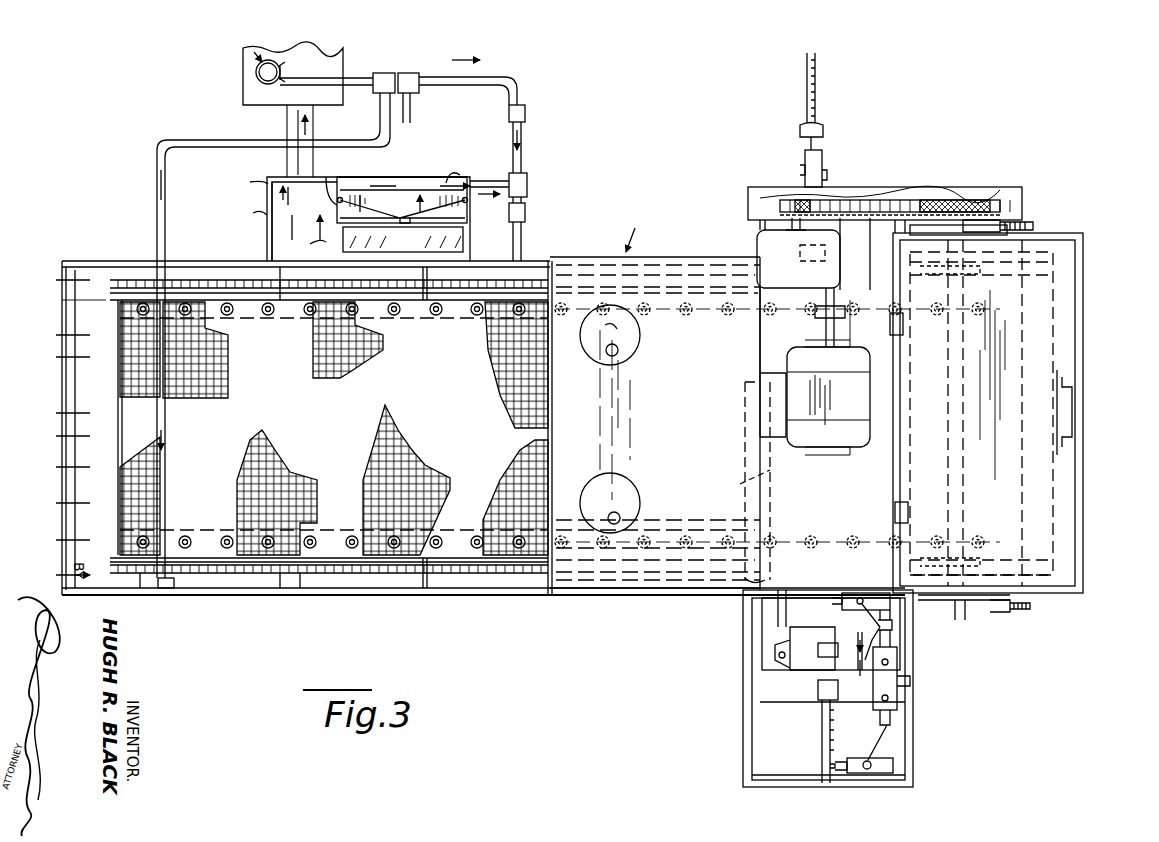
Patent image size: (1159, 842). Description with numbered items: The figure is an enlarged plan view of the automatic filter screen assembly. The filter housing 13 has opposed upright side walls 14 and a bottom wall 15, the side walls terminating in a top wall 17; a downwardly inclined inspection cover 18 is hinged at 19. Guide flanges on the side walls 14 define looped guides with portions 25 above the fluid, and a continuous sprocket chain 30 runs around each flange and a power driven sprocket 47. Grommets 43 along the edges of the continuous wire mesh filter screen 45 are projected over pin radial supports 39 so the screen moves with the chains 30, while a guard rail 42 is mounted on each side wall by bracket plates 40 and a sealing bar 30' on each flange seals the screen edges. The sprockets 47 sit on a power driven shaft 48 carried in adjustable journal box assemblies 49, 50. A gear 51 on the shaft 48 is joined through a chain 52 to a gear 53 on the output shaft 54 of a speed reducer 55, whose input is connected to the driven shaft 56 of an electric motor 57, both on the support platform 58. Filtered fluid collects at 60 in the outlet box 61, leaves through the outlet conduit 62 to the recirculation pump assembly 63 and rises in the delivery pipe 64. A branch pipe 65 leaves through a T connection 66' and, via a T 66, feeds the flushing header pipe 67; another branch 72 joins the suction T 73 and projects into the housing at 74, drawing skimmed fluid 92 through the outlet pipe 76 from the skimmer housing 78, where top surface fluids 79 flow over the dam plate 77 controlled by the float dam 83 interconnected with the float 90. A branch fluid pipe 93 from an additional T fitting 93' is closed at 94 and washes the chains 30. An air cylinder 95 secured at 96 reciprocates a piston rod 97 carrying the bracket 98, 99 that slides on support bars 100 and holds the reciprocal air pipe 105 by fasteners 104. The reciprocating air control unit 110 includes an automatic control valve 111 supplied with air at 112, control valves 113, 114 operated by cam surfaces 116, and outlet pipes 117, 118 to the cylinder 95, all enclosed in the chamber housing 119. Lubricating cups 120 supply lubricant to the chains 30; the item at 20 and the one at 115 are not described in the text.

The filter housing 13 is at (634, 228).
The side walls 14 is at (101, 261).
The bottom wall 15 is at (74, 452).
The top wall 17 is at (590, 268).
The inspection cover 18 is at (1062, 342).
The hinge 19 is at (903, 322).
The latch 20 is at (1072, 412).
The guide portions 25 is at (227, 271).
The sprocket chain 30 is at (329, 425).
The sealing bar 30' is at (777, 425).
The pin radial supports 39 is at (137, 312).
The bracket plates 40 is at (425, 300).
The guard rail 42 is at (106, 298).
The grommets 43 is at (143, 314).
The filter screen 45 is at (118, 375).
The power driven sprockets 47 is at (990, 264).
The power driven shaft 48 is at (905, 230).
The journal box assembly 49 is at (928, 604).
The journal box assembly 50 is at (1000, 618).
The gear 51 is at (956, 196).
The chain 52 is at (893, 198).
The gear 53 is at (766, 193).
The output shaft 54 is at (799, 195).
The speed reducer 55 is at (756, 238).
The driven shaft 56 is at (845, 330).
The electric motor 57 is at (852, 450).
The support platform 58 is at (765, 354).
The collected fluid 60 is at (268, 248).
The outlet box 61 is at (412, 153).
The outlet conduit 62 is at (288, 126).
The recirculation pump assembly 63 is at (246, 64).
The delivery pipe 64 is at (254, 76).
The branch pipe 65 is at (353, 78).
The T fitting 66 is at (425, 90).
The T connection 66' is at (298, 67).
The fluid flushing header pipe 67 is at (412, 118).
The branch 72 is at (448, 62).
The suction T 73 is at (527, 184).
The recirculation outlet 74 is at (525, 240).
The outlet pipe 76 is at (482, 178).
The dam plate 77 is at (387, 200).
The skimmer housing 78 is at (344, 162).
The top surface fluids 79 is at (255, 185).
The float dam 83 is at (410, 247).
The float 90 is at (411, 206).
The skimmed fluid 92 is at (388, 171).
The branch fluid pipe 93 is at (273, 335).
The T fitting 93' is at (393, 66).
The closed end 94 is at (175, 586).
The air cylinder 95 is at (741, 482).
The securing point 96 is at (736, 580).
The piston rod 97 is at (776, 624).
The bracket 98 is at (804, 668).
The bracket assembly 99 is at (822, 160).
The support bars 100 is at (806, 93).
The fasteners 104 is at (826, 176).
The reciprocal air pipe 105 is at (823, 142).
The reciprocating air control unit 110 is at (905, 750).
The automatic control valve 111 is at (897, 696).
The air supply 112 is at (858, 646).
The control valve 113 is at (858, 776).
The control valve 114 is at (874, 592).
The fitting 115 is at (836, 772).
The cam surfaces 116 is at (860, 618).
The outlet pipe 117 is at (740, 416).
The outlet pipe 118 is at (760, 660).
The chamber housing 119 is at (913, 780).
The lubricating cups 120 is at (628, 355).